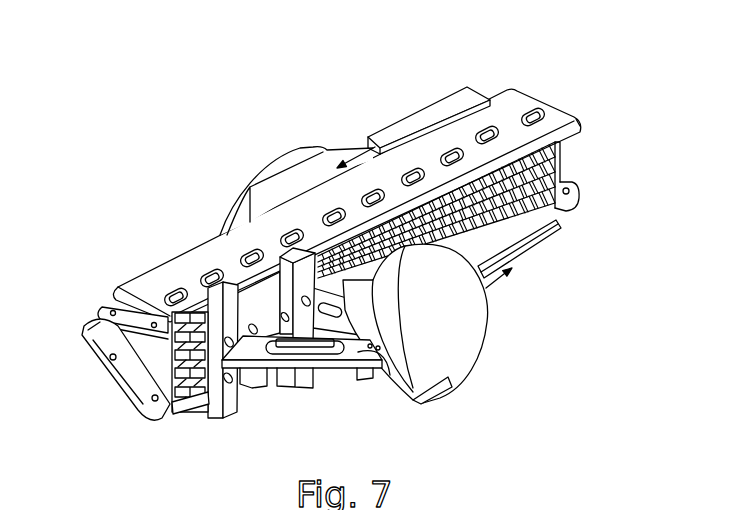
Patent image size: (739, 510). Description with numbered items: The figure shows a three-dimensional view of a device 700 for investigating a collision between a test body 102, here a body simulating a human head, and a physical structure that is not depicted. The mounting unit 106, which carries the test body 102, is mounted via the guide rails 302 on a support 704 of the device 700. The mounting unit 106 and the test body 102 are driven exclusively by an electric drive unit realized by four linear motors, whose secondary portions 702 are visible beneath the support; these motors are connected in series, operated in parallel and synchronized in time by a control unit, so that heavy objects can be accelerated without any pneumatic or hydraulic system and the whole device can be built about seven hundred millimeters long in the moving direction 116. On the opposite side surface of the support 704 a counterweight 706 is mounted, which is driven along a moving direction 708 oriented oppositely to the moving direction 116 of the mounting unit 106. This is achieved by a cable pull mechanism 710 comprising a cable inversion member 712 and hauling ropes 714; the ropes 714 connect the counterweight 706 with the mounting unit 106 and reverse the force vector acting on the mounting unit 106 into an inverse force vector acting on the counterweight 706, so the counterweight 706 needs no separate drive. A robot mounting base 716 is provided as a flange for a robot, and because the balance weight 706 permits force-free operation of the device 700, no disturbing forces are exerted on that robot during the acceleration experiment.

The device 700 is at (338, 236).
The counterweight 706 is at (428, 118).
The moving direction 708 is at (364, 148).
The robot mounting base 716 is at (270, 161).
The support 704 is at (203, 258).
The cable pull mechanism 710 is at (338, 254).
The cable inversion member 712 is at (99, 314).
The hauling ropes 714 is at (114, 388).
The guide rails 302 is at (556, 141).
The secondary portions of the linear motors 702 is at (546, 232).
The moving direction 116 is at (504, 283).
The test body 102 is at (462, 389).
The mounting unit 106 is at (250, 371).